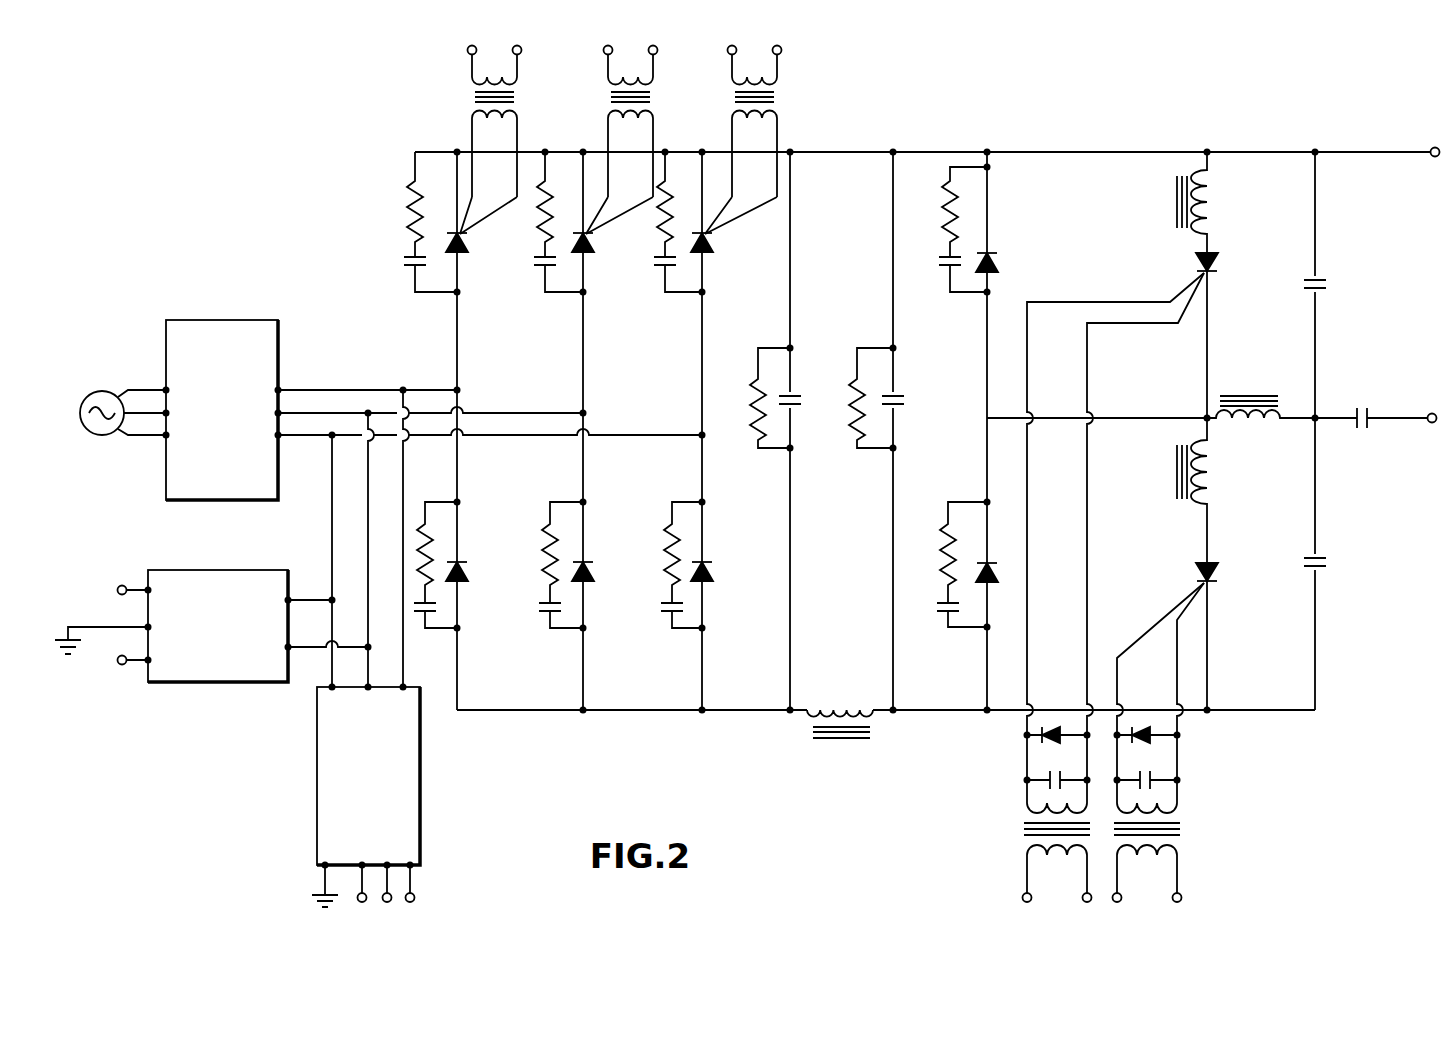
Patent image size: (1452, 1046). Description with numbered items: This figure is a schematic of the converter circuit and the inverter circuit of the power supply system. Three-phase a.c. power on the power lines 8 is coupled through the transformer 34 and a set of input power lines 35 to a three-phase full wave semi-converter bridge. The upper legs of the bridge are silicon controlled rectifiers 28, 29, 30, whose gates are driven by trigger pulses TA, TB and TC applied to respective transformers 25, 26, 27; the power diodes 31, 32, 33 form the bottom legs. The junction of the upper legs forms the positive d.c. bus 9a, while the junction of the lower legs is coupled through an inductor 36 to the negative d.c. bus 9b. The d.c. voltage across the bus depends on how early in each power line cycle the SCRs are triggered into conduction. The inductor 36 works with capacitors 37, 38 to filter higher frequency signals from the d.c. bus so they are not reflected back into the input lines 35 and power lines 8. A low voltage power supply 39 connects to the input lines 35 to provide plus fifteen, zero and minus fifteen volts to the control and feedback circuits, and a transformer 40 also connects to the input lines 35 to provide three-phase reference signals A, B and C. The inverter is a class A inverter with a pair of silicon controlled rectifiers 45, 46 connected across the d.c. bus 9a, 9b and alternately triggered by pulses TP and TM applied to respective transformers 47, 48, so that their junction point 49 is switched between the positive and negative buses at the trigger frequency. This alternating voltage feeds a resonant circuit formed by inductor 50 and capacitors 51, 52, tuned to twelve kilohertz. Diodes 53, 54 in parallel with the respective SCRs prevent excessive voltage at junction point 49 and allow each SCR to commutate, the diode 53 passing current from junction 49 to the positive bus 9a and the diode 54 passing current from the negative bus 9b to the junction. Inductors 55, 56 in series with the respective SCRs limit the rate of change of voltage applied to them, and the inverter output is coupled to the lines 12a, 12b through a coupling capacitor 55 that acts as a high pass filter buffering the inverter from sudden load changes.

The power lines 8 is at (127, 382).
The positive d.c. bus 9a is at (931, 151).
The negative d.c. bus 9b is at (968, 711).
The line 12a is at (1432, 150).
The line 12b is at (1430, 413).
The transformer 25 is at (778, 98).
The transformer 26 is at (657, 96).
The transformer 27 is at (520, 96).
The silicon controlled rectifier 28 is at (712, 240).
The silicon controlled rectifier 29 is at (588, 238).
The silicon controlled rectifier 30 is at (466, 236).
The power diode 31 is at (710, 567).
The power diode 32 is at (590, 568).
The power diode 33 is at (465, 565).
The transformer 34 is at (217, 320).
The input power lines 35 is at (341, 436).
The inductor 36 is at (842, 745).
The capacitor 37 is at (794, 396).
The capacitor 38 is at (898, 398).
The low voltage power supply 39 is at (198, 570).
The transformer 40 is at (426, 779).
The silicon controlled rectifier 45 is at (1215, 262).
The silicon controlled rectifier 46 is at (1215, 575).
The transformer 47 is at (1018, 830).
The transformer 48 is at (1186, 834).
The junction point 49 is at (1206, 416).
The inductor 50 is at (1242, 393).
The capacitor 51 is at (1320, 566).
The capacitor 52 is at (1320, 290).
The diode 53 is at (1000, 262).
The diode 54 is at (1000, 572).
The inductor / coupling capacitor 55 is at (1173, 197).
The inductor 56 is at (1173, 475).